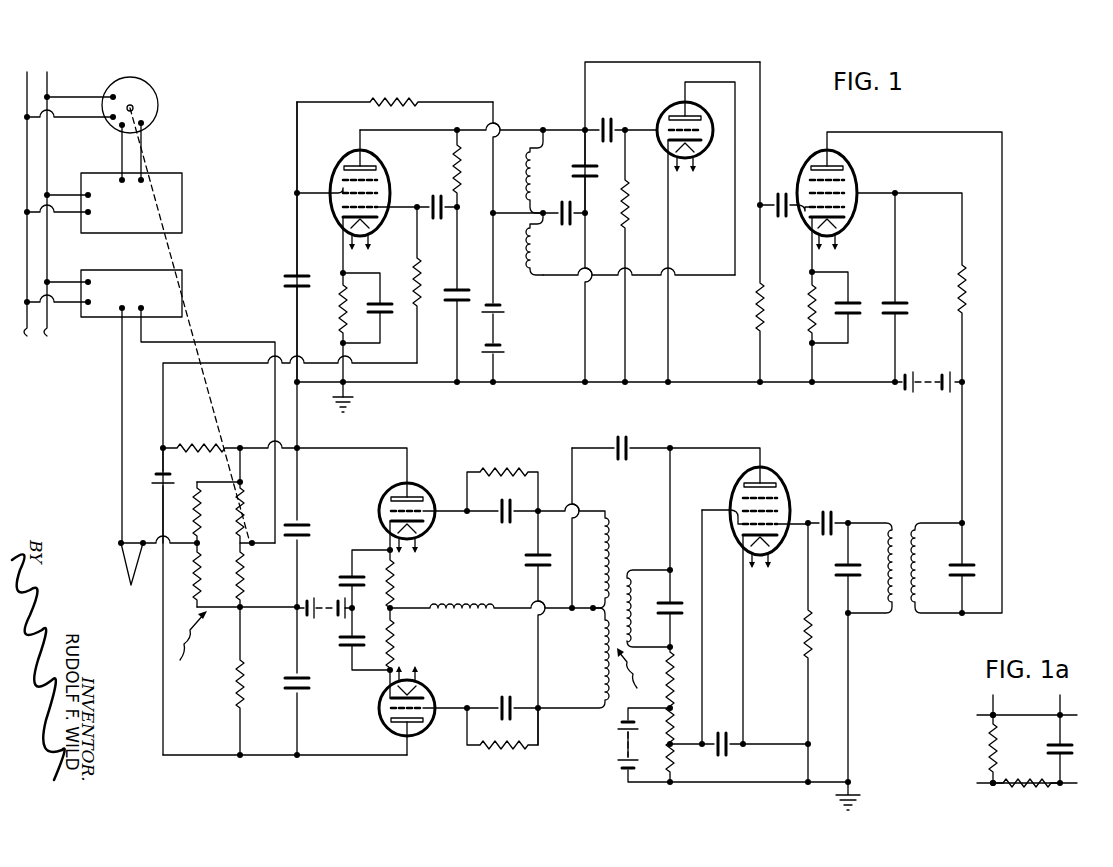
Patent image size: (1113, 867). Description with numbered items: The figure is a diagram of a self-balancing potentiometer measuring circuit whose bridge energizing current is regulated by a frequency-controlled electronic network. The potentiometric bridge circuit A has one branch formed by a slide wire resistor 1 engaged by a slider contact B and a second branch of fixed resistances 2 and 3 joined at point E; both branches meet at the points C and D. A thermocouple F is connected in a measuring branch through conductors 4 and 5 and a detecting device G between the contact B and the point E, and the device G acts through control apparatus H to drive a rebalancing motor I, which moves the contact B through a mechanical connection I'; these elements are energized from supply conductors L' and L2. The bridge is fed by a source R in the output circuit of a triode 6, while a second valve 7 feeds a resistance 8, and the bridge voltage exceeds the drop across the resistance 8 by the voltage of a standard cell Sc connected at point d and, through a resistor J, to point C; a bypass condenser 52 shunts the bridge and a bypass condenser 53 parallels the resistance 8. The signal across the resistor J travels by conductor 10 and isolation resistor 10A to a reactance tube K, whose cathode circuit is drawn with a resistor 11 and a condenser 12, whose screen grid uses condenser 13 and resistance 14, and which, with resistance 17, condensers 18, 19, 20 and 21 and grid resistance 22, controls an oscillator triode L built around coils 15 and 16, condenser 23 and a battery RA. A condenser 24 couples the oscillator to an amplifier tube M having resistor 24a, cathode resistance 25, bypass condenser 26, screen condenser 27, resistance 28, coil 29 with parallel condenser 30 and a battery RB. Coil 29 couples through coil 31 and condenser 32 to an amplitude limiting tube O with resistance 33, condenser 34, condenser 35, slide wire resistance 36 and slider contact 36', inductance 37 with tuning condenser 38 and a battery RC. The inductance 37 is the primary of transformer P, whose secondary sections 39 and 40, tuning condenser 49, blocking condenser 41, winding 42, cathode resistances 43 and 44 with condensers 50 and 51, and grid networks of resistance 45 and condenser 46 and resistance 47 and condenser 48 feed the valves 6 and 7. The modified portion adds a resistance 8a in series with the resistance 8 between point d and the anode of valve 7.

In FIG. 1, the slide wire resistor 1 is at (237, 531).
In FIG. 1, the fixed resistance 2 is at (199, 508).
In FIG. 1, the fixed resistance 3 is at (202, 568).
In FIG. 1, the conductor 4 is at (122, 372).
In FIG. 1, the conductor 5 is at (218, 342).
In FIG. 1, the electronic triode 6 is at (393, 490).
In FIG. 1, the electronic valve 7 is at (380, 712).
In FIG. 1, the resistance 8 is at (244, 680).
In FIG. 1a, the resistance 8 is at (999, 748).
In FIG. 1a, the resistance 8a is at (1044, 778).
In FIG. 1, the conductor 10 is at (163, 400).
In FIG. 1, the isolation resistor 10A is at (419, 289).
In FIG. 1, the resistor 11 is at (345, 295).
In FIG. 1, the capacitor 12 is at (383, 318).
In FIG. 1, the condenser 13 is at (285, 275).
In FIG. 1, the resistance 14 is at (391, 109).
In FIG. 1, the inductance coil 15 is at (527, 170).
In FIG. 1, the inductance coil 16 is at (526, 248).
In FIG. 1, the resistance 17 is at (457, 164).
In FIG. 1, the condenser 18 is at (456, 306).
In FIG. 1, the condenser 19 is at (438, 219).
In FIG. 1, the condenser 20 is at (576, 170).
In FIG. 1, the condenser 21 is at (604, 120).
In FIG. 1, the resistance 22 is at (628, 208).
In FIG. 1, the condenser 23 is at (566, 224).
In FIG. 1, the condenser 24 is at (778, 217).
In FIG. 1, the resistor 24a is at (752, 312).
In FIG. 1, the resistance 25 is at (808, 298).
In FIG. 1, the bypass condenser 26 is at (846, 304).
In FIG. 1, the condenser 27 is at (893, 302).
In FIG. 1, the resistance 28 is at (958, 298).
In FIG. 1, the coil 29 is at (919, 547).
In FIG. 1, the condenser 30 is at (957, 580).
In FIG. 1, the coil 31 is at (888, 543).
In FIG. 1, the condenser 32 is at (859, 574).
In FIG. 1, the resistance 33 is at (803, 634).
In FIG. 1, the condenser 34 is at (829, 512).
In FIG. 1, the condenser 35 is at (726, 732).
In FIG. 1, the slide wire resistance 36 is at (657, 716).
In FIG. 1, the slider contact 36' is at (695, 762).
In FIG. 1, the inductance 37 is at (631, 589).
In FIG. 1, the tuning condenser 38 is at (666, 630).
In FIG. 1, the secondary winding section 39 is at (607, 534).
In FIG. 1, the secondary winding section 40 is at (600, 669).
In FIG. 1, the blocking condenser 41 is at (619, 440).
In FIG. 1, the winding 42 is at (441, 601).
In FIG. 1, the resistance 43 is at (395, 578).
In FIG. 1, the resistance 44 is at (395, 643).
In FIG. 1, the resistance 45 is at (501, 482).
In FIG. 1, the bypass condenser 46 is at (504, 522).
In FIG. 1, the resistance 47 is at (485, 754).
In FIG. 1, the bypass condenser 48 is at (500, 702).
In FIG. 1, the tuning condenser 49 is at (530, 562).
In FIG. 1, the condenser 50 is at (355, 572).
In FIG. 1, the condenser 51 is at (354, 632).
In FIG. 1, the bypass condenser 52 is at (307, 530).
In FIG. 1, the bypass condenser 53 is at (305, 678).
In FIG. 1a, the bypass condenser 53 is at (1074, 748).
In FIG. 1, the rebalancing motor I is at (141, 128).
In FIG. 1, the mechanical connection I' is at (190, 325).
In FIG. 1, the control apparatus H is at (107, 173).
In FIG. 1, the current or unbalance detecting device G is at (118, 270).
In FIG. 1, the supply conductor L' is at (54, 209).
In FIG. 1, the supply conductor L2 is at (17, 209).
In FIG. 1, the resistor J is at (194, 446).
In FIG. 1, the standard cell Sc is at (172, 481).
In FIG. 1, the bridge circuit point C is at (242, 483).
In FIG. 1, the bridge circuit point E is at (192, 549).
In FIG. 1, the slider contact B is at (250, 548).
In FIG. 1, the bridge circuit point D is at (244, 607).
In FIG. 1a, the bridge circuit point D is at (991, 714).
In FIG. 1, the thermocouple F is at (122, 571).
In FIG. 1, the potentiometric bridge circuit A is at (186, 646).
In FIG. 1, the point d is at (242, 755).
In FIG. 1a, the point d is at (992, 783).
In FIG. 1, the reactance tube K is at (387, 184).
In FIG. 1, the oscillator triode L is at (696, 233).
In FIG. 1, the amplifier tube M is at (855, 174).
In FIG. 1, the amplitude limiting tube O is at (784, 501).
In FIG. 1, the high frequency transformer P is at (633, 678).
In FIG. 1, the source of unidirectional current R is at (328, 622).
In FIG. 1, the battery RA is at (508, 330).
In FIG. 1, the battery RB is at (927, 390).
In FIG. 1, the source of unidirectional voltage RC is at (624, 746).